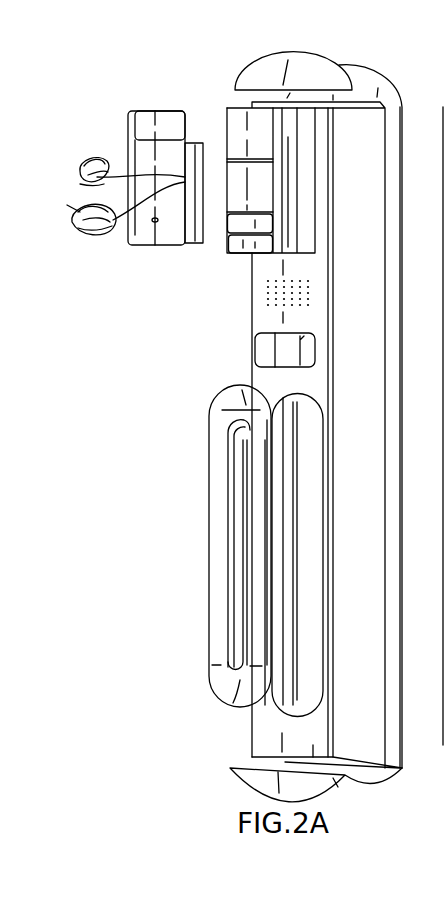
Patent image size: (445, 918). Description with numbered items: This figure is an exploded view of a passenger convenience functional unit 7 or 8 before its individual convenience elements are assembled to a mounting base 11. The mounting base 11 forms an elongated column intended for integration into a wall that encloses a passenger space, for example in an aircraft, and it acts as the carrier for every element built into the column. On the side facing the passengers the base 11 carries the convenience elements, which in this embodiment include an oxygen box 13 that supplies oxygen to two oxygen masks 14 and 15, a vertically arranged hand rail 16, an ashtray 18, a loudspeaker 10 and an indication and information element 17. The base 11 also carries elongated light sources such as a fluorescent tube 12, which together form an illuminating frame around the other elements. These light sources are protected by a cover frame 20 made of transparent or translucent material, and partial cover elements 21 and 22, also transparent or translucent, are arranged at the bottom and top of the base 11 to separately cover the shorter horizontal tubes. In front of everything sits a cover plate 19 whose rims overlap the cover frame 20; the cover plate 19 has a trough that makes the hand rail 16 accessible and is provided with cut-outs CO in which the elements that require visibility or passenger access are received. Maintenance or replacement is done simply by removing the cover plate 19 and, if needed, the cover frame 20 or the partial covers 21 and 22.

The functional unit 7 is at (261, 400).
The functional unit 8 is at (313, 435).
The loudspeaker 10 is at (270, 293).
The mounting base 11 is at (368, 433).
The fluorescent tube 12 is at (444, 747).
The oxygen box 13 is at (147, 158).
The oxygen mask 14 is at (83, 163).
The oxygen mask 15 is at (78, 210).
The hand rail 16 is at (222, 591).
The indication and information element 17 is at (245, 250).
The ashtray 18 is at (265, 352).
The cover plate 19 is at (267, 740).
The cover frame 20 is at (398, 120).
The partial cover element 21 is at (257, 778).
The partial cover element 22 is at (318, 73).
The cut-out CO is at (307, 227).